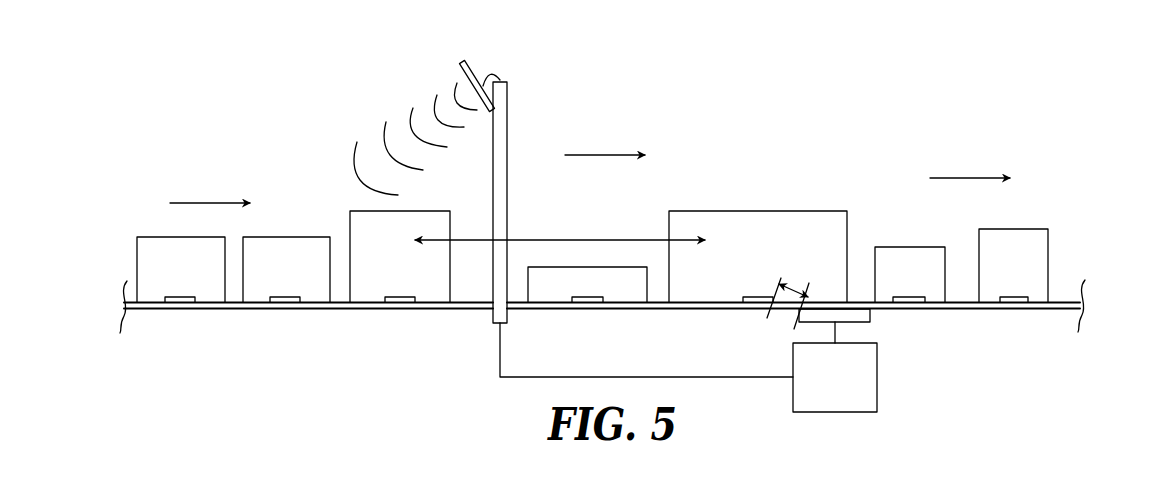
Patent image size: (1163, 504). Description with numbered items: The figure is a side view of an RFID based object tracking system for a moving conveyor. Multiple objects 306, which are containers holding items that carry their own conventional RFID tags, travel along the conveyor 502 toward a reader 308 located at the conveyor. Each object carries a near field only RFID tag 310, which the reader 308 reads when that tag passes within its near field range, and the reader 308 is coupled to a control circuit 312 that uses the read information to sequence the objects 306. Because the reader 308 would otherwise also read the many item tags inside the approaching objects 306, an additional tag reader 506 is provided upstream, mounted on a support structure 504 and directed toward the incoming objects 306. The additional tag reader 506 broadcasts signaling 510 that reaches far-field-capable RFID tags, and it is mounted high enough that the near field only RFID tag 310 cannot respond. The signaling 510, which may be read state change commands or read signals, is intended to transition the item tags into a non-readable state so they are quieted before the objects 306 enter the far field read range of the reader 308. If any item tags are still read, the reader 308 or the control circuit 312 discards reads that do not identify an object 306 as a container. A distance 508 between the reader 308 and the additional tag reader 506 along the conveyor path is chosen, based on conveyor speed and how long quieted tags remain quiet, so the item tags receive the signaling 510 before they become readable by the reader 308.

The object 306 is at (286, 237).
The reader 308 is at (872, 313).
The near field only RFID tag 310 is at (390, 297).
The control circuit 312 is at (877, 373).
The conveyor 502 is at (230, 310).
The support structure 504 is at (508, 108).
The additional tag reader 506 is at (458, 73).
The distance 508 is at (556, 240).
The signaling 510 is at (377, 112).